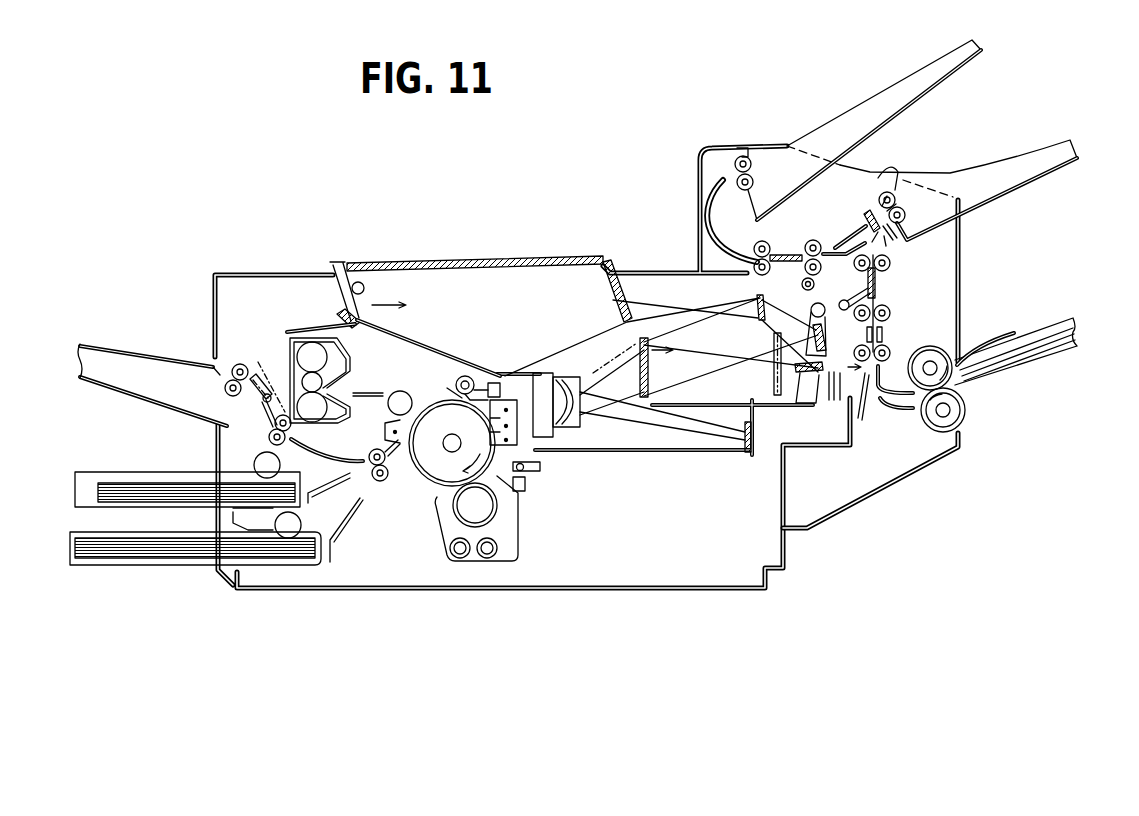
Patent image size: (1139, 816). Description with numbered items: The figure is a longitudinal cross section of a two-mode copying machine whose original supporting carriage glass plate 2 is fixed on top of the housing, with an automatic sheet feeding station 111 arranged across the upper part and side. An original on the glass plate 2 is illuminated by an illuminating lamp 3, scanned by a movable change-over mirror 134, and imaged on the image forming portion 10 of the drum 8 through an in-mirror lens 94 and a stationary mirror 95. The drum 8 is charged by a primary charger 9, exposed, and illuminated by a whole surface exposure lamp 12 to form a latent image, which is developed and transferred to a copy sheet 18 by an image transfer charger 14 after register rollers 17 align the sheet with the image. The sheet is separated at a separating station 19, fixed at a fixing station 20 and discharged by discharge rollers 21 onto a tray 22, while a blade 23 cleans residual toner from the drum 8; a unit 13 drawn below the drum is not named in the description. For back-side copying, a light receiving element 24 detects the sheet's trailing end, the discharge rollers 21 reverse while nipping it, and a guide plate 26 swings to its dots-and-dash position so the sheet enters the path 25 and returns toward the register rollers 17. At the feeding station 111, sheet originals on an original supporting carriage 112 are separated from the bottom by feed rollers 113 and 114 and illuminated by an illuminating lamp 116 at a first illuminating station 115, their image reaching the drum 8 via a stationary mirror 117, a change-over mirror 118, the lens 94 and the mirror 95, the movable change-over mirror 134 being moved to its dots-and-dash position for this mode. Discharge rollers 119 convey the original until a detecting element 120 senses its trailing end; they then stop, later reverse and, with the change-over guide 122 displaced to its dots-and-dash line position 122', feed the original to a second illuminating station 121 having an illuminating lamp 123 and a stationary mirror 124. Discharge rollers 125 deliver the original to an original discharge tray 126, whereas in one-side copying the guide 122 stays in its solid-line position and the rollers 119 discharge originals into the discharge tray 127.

The original carriage glass plate 2 is at (509, 258).
The illuminating lamp 3 is at (368, 288).
The drum 8 is at (420, 477).
The primary charger 9 is at (512, 399).
The image forming portion 10 is at (519, 485).
The whole surface exposure lamp 12 is at (540, 466).
The fixing unit 13 is at (453, 518).
The image transfer charger 14 is at (383, 428).
The register rollers 17 is at (378, 482).
The copy sheet 18 is at (127, 490).
The separating station 19 is at (415, 398).
The fixing station 20 is at (298, 331).
The discharge rollers 21 is at (240, 363).
The tray 22 is at (127, 390).
The blade 23 is at (465, 374).
The light receiving element 24 is at (255, 371).
The path 25 is at (262, 418).
The guide plate 26 is at (224, 396).
The in-mirror lens 94 is at (560, 375).
The stationary mirror 95 is at (751, 454).
The automatic sheet feeding station 111 is at (919, 478).
The original supporting carriage 112 is at (1055, 345).
The feed roller 113 is at (924, 345).
The feed roller 114 is at (966, 410).
The first illuminating station 115 is at (870, 286).
The illuminating lamp 116 is at (877, 290).
The stationary mirror 117 is at (755, 306).
The change-over mirror 118 is at (840, 395).
The discharge rollers 119 is at (893, 173).
The detecting element 120 is at (884, 191).
The second illuminating station 121 is at (763, 276).
The change-over guide 122 is at (849, 216).
The dots-and-dash line position of change-over guide 122' is at (916, 246).
The illuminating lamp 123 is at (786, 256).
The stationary mirror 124 is at (803, 405).
The discharge rollers 125 is at (739, 154).
The original discharge tray 126 is at (965, 66).
The discharge tray 127 is at (1050, 177).
The movable change-over mirror 134 is at (647, 380).